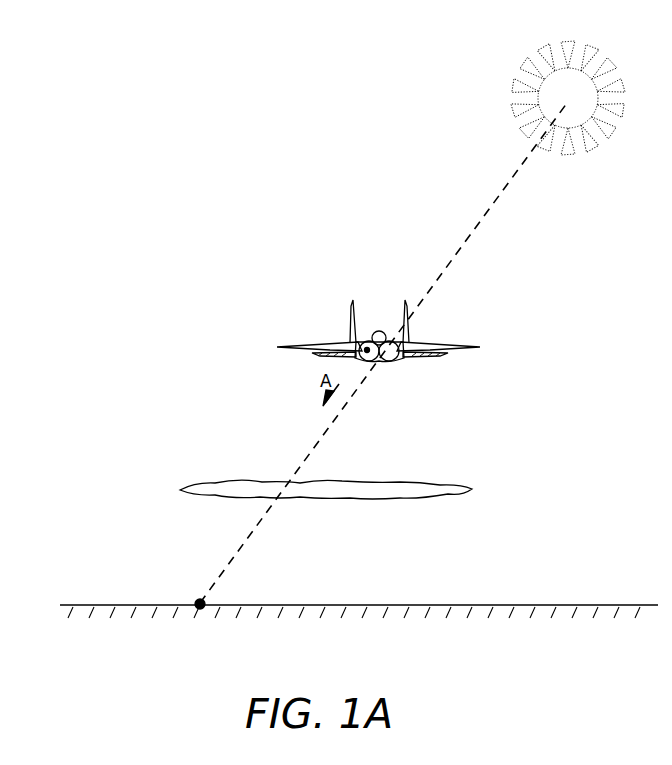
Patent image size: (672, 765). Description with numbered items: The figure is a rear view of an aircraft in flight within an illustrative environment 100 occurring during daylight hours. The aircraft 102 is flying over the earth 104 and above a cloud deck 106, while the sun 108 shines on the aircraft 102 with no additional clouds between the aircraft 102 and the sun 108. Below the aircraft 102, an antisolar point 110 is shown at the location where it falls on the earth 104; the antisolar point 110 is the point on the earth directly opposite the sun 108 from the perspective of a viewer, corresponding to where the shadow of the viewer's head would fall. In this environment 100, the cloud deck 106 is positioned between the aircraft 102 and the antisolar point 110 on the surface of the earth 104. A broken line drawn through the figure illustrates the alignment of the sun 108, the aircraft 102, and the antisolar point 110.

The illustrative environment 100 is at (241, 72).
The aircraft 102 is at (308, 344).
The earth 104 is at (528, 604).
The cloud deck 106 is at (420, 492).
The sun 108 is at (553, 77).
The antisolar point 110 is at (200, 603).